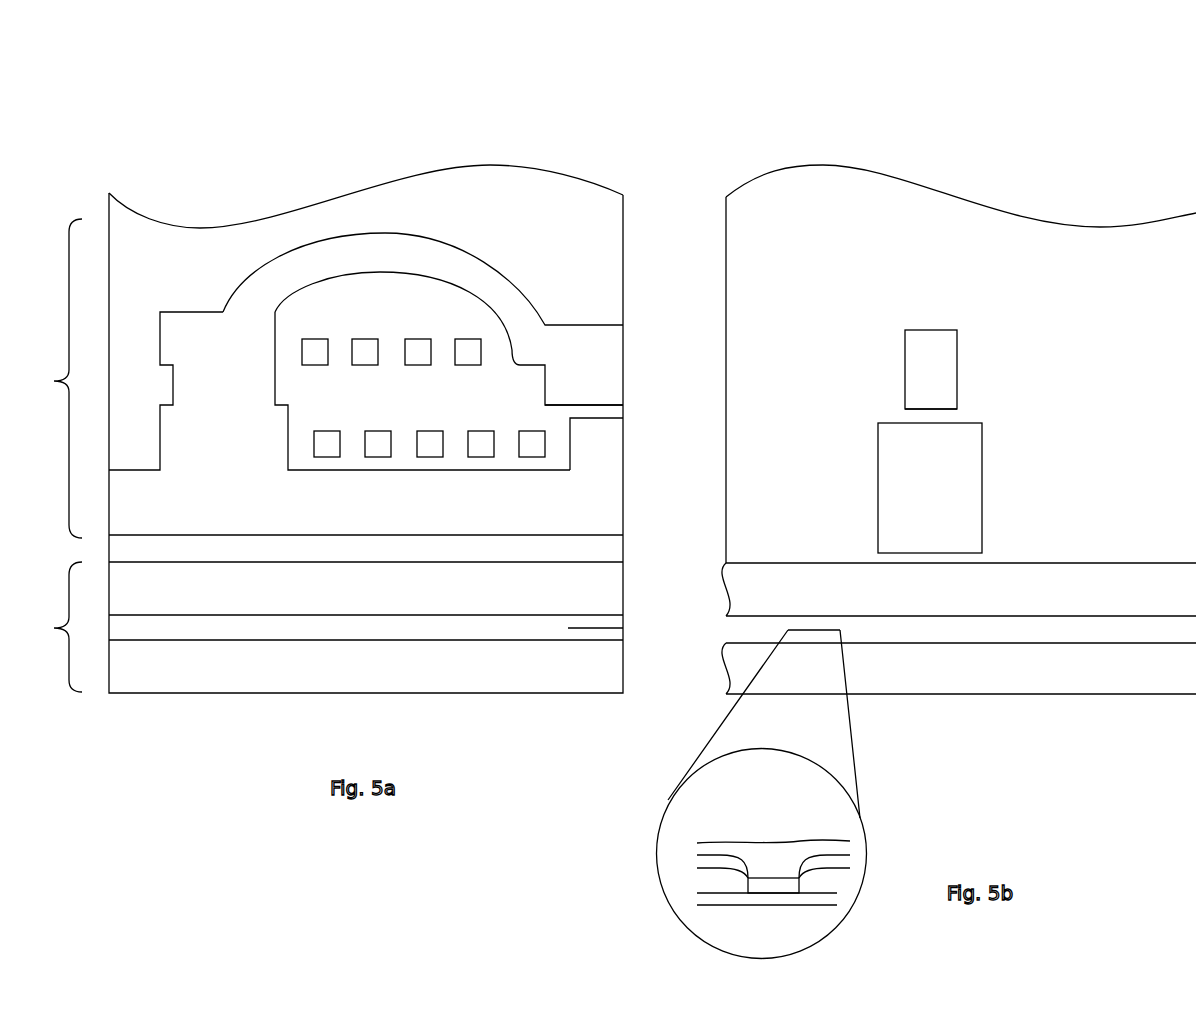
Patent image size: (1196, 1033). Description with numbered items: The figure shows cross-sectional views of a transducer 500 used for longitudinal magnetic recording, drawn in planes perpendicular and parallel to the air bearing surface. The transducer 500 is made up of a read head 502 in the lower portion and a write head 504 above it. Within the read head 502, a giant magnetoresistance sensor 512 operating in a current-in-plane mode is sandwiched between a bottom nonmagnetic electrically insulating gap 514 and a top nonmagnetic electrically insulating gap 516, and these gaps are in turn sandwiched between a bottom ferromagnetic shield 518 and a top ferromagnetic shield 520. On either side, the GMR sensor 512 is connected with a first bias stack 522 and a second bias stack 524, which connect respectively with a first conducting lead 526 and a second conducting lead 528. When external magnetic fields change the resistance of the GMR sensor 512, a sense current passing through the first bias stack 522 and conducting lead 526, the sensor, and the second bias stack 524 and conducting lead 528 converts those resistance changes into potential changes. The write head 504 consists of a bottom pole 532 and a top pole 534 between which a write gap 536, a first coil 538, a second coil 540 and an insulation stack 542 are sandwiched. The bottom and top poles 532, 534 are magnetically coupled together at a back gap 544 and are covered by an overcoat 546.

In FIG. 5A, the transducer 500 is at (148, 117).
In FIG. 5A, the read head 502 is at (62, 599).
In FIG. 5A, the write head 504 is at (60, 356).
In FIG. 5B, the giant magnetoresistance (GMR) sensor 512 is at (768, 883).
In FIG. 5B, the bottom nonmagnetic electrically insulating gap 514 is at (802, 898).
In FIG. 5B, the top nonmagnetic electrically insulating gap 516 is at (765, 860).
In FIG. 5A, the bottom ferromagnetic shield 518 is at (366, 654).
In FIG. 5B, the bottom ferromagnetic shield 518 is at (959, 668).
In FIG. 5A, the top ferromagnetic shield 520 is at (366, 588).
In FIG. 5B, the top ferromagnetic shield 520 is at (959, 589).
In FIG. 5B, the first bias stack 522 is at (702, 880).
In FIG. 5B, the second bias stack 524 is at (835, 882).
In FIG. 5B, the first conducting lead 526 is at (700, 858).
In FIG. 5B, the second conducting lead 528 is at (840, 863).
In FIG. 5A, the bottom pole 532 is at (366, 476).
In FIG. 5B, the bottom pole 532 is at (930, 488).
In FIG. 5A, the top pole 534 is at (423, 305).
In FIG. 5B, the top pole 534 is at (931, 369).
In FIG. 5A, the write gap 536 is at (617, 413).
In FIG. 5B, the write gap 536 is at (912, 417).
In FIG. 5A, the first coil 538 is at (503, 435).
In FIG. 5A, the second coil 540 is at (418, 330).
In FIG. 5A, the insulation stack 542 is at (352, 390).
In FIG. 5A, the back gap 544 is at (218, 365).
In FIG. 5A, the overcoat 546 is at (366, 196).
In FIG. 5B, the overcoat 546 is at (961, 199).